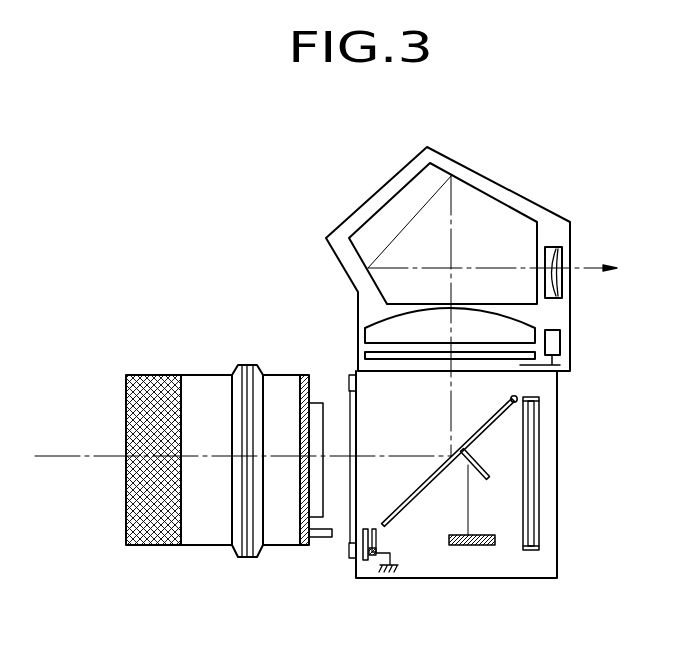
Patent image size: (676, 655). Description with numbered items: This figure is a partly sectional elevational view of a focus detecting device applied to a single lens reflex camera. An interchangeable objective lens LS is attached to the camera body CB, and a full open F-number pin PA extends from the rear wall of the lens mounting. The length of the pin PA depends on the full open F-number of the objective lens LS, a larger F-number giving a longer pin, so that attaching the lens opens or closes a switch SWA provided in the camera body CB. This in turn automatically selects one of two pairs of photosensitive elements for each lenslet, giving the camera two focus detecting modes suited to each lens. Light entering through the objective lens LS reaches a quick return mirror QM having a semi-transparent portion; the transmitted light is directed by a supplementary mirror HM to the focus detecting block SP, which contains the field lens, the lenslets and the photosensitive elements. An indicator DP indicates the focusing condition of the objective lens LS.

The objective lens LS is at (201, 548).
The full open F-number pin PA is at (320, 539).
The indicator DP is at (562, 343).
The quick return mirror QM is at (483, 423).
The supplementary mirror HM is at (489, 456).
The switch SWA is at (380, 536).
The focus detecting block SP is at (472, 523).
The camera body CB is at (471, 584).